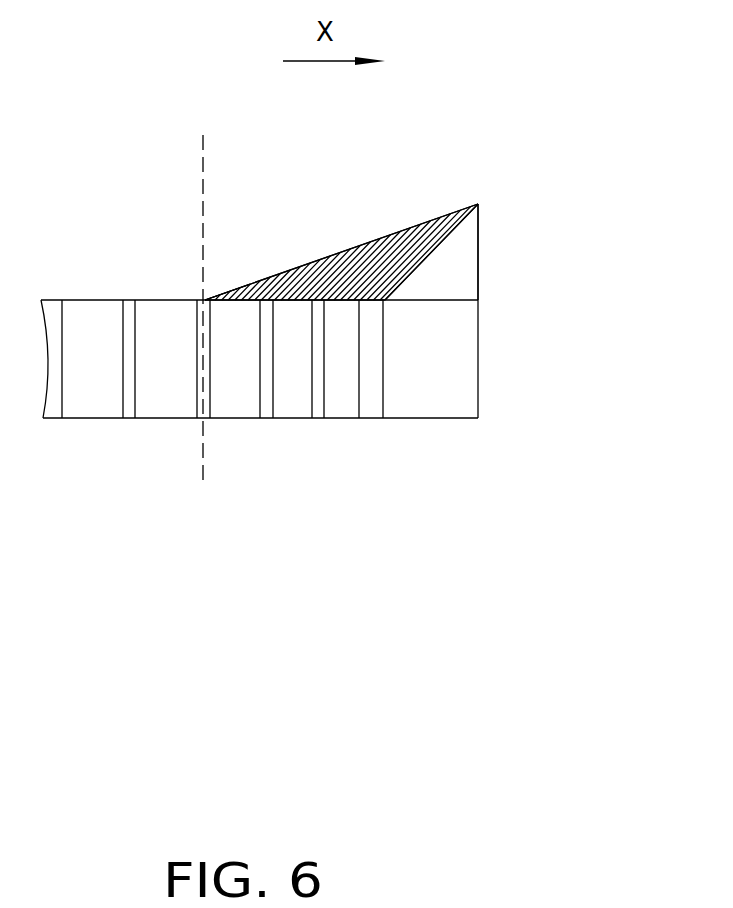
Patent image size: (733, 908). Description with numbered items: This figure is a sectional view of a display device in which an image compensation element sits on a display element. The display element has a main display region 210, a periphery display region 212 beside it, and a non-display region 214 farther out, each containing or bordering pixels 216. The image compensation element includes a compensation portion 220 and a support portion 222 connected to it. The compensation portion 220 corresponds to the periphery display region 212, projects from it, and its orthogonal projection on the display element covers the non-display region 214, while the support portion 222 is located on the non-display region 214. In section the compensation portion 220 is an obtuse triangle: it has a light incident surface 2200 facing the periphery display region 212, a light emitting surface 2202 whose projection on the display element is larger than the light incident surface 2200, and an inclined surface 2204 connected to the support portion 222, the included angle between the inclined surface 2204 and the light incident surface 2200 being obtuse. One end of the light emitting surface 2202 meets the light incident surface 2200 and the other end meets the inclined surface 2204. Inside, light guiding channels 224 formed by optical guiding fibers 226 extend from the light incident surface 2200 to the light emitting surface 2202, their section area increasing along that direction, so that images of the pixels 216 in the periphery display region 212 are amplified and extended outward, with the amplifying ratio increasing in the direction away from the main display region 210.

The main display region 210 is at (200, 425).
The periphery display region 212 is at (383, 425).
The non-display region 214 is at (480, 425).
The pixels 216 is at (343, 377).
The compensation portion 220 is at (462, 203).
The support portion 222 is at (463, 253).
The light guiding channels 224 is at (367, 237).
The optical guiding fibers 226 is at (422, 226).
The light incident surface 2200 is at (352, 306).
The light emitting surface 2202 is at (240, 274).
The inclined surface 2204 is at (433, 265).